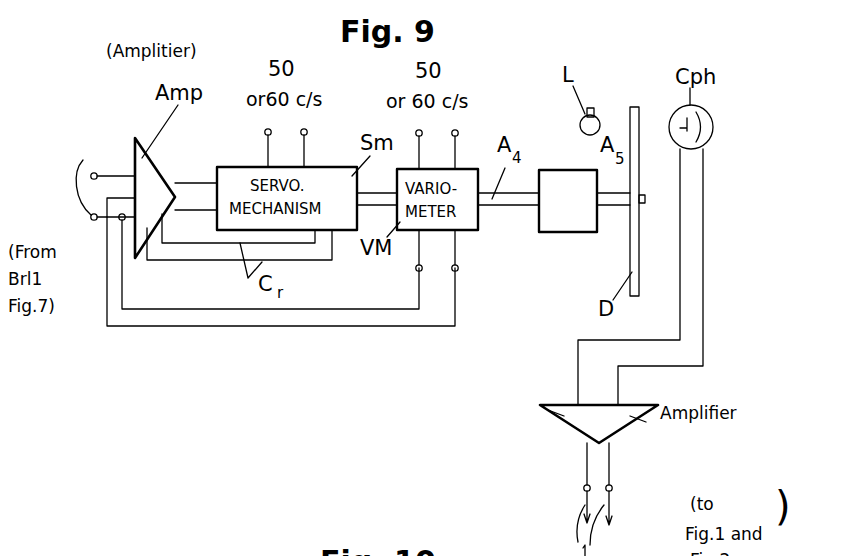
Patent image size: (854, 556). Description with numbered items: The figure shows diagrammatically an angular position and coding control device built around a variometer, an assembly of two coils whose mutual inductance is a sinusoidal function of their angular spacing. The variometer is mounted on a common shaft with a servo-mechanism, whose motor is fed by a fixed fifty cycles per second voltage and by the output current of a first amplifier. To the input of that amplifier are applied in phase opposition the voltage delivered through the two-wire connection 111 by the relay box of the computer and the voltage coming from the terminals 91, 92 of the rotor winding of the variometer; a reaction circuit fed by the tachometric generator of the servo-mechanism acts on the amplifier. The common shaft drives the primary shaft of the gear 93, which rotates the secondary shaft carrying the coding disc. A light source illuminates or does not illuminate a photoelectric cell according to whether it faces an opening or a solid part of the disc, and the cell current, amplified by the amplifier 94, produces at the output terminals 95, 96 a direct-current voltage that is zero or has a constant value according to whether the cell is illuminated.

The two-wire connection 111 is at (85, 158).
The rotor winding terminal 91 is at (416, 269).
The rotor winding terminal 92 is at (458, 269).
The gear 93 is at (563, 232).
The amplifier 94 is at (568, 413).
The output terminal 95 is at (585, 489).
The output terminal 96 is at (611, 490).